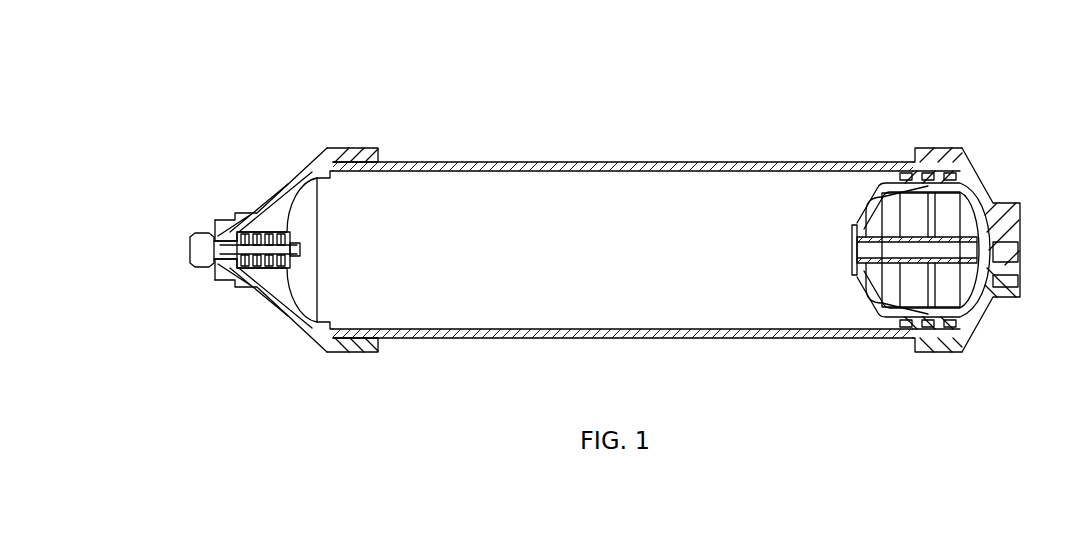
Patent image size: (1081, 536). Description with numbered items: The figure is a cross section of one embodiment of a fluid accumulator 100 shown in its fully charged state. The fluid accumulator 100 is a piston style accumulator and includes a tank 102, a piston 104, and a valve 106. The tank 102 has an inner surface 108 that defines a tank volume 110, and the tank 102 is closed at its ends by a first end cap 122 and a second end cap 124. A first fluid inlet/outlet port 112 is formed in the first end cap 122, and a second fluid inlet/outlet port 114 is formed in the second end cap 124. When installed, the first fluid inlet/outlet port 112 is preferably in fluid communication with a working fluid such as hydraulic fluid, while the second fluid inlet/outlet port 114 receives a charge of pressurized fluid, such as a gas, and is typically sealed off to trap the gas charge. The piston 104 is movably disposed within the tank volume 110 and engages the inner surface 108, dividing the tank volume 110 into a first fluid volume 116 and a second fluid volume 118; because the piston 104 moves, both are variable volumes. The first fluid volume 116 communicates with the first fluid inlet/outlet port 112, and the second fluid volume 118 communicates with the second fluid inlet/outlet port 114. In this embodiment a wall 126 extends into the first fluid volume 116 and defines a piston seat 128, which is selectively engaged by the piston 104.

The fluid accumulator 100 is at (800, 92).
The tank 102 is at (505, 158).
The piston 104 is at (848, 257).
The valve 106 is at (205, 215).
The inner surface 108 is at (405, 176).
The tank volume 110 is at (615, 193).
The first fluid inlet/outlet port 112 is at (246, 220).
The second fluid inlet/outlet port 114 is at (1020, 281).
The first fluid volume 116 is at (436, 309).
The second fluid volume 118 is at (977, 208).
The first end cap 122 is at (343, 147).
The second end cap 124 is at (936, 147).
The wall 126 is at (323, 176).
The piston seat 128 is at (340, 176).